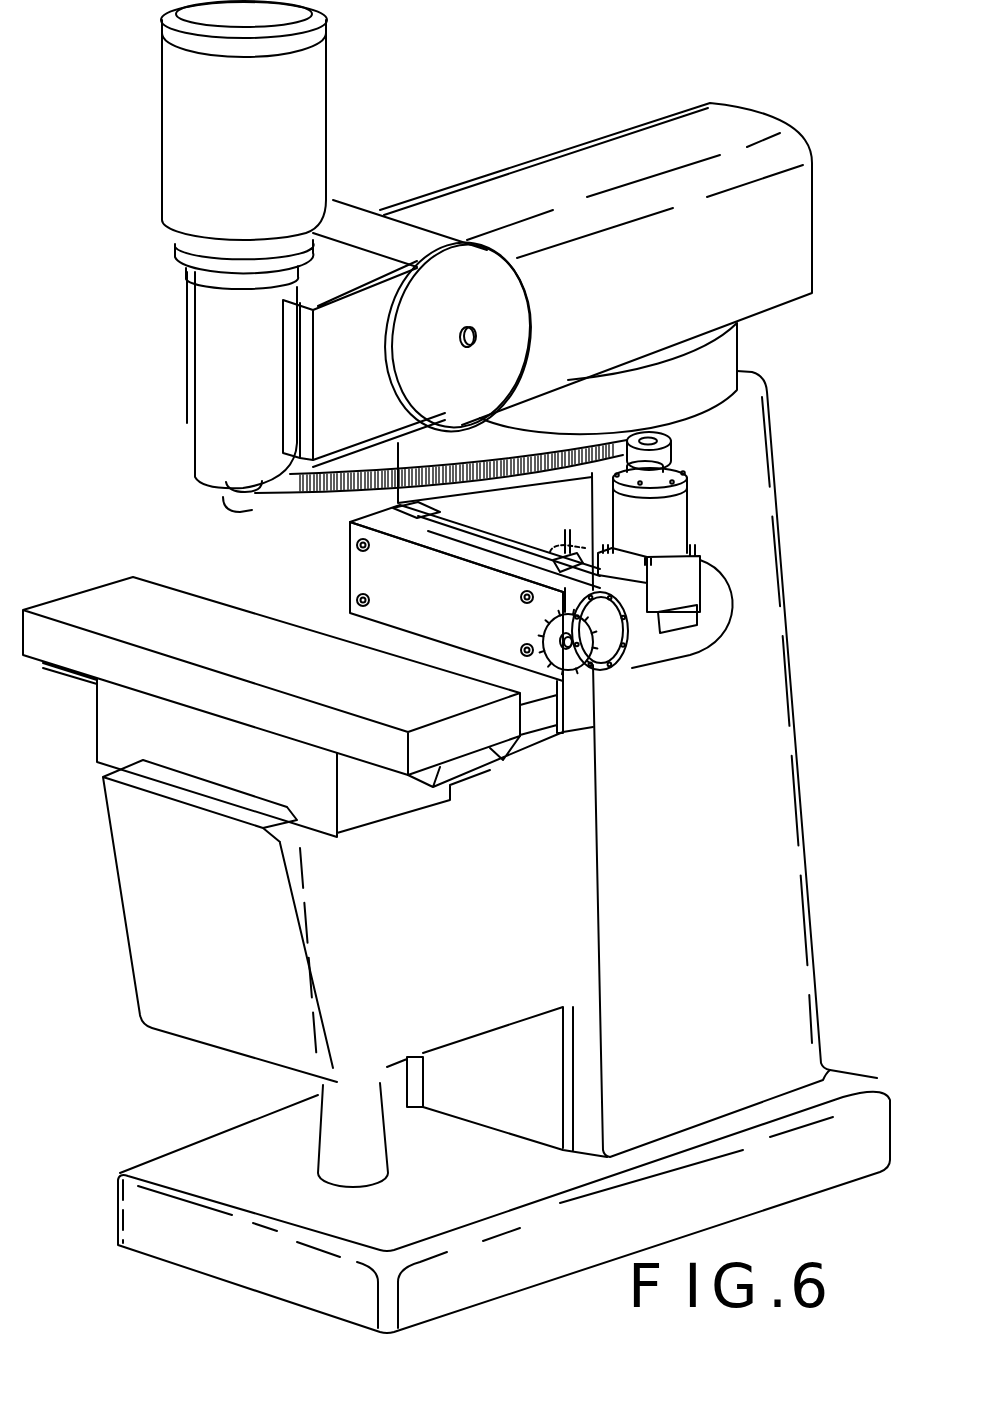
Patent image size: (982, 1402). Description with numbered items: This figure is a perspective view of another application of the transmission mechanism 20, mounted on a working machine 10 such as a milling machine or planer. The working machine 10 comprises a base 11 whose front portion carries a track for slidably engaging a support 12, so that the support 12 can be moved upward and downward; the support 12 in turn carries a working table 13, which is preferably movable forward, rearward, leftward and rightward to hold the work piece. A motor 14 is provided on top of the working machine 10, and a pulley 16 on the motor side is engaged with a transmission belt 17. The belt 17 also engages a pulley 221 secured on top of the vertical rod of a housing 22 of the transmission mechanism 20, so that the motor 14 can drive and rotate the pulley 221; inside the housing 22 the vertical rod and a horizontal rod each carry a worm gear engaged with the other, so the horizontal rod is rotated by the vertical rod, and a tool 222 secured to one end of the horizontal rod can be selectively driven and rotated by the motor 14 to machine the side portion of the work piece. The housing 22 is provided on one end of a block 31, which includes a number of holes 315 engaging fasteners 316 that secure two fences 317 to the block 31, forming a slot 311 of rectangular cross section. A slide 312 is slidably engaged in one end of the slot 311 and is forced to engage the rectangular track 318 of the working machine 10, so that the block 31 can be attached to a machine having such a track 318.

The working machine 10 is at (805, 143).
The base 11 is at (793, 878).
The support 12 is at (145, 978).
The working table 13 is at (103, 733).
The motor 14 is at (318, 99).
The pulley 16 is at (229, 508).
The transmission belt 17 is at (285, 497).
The feed motor 20 is at (697, 507).
The housing 22 is at (695, 580).
The pulley 221 is at (673, 433).
The tool 222 is at (623, 660).
The block 31 is at (455, 583).
The slot 311 is at (450, 543).
The slide 312 is at (418, 506).
The holes 315 is at (523, 607).
The fasteners 316 is at (520, 596).
The fences 317 is at (567, 554).
The track 318 is at (553, 702).